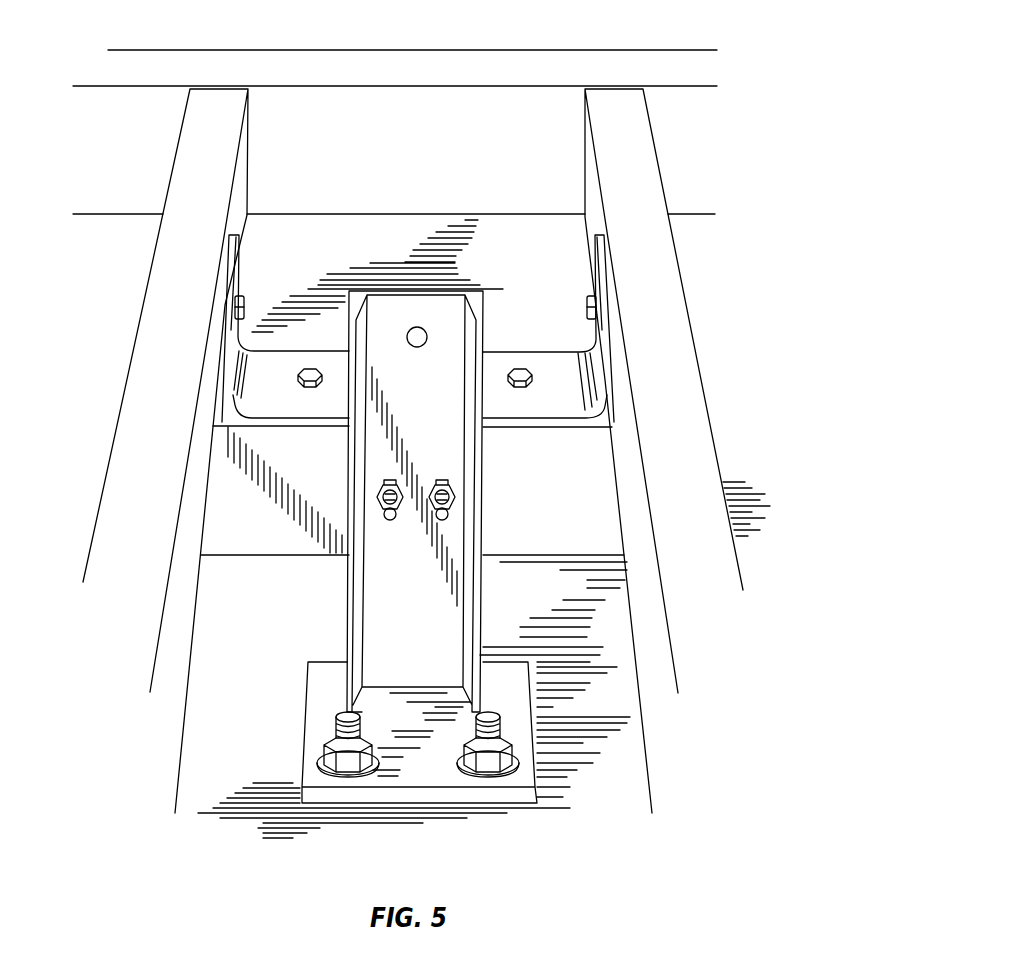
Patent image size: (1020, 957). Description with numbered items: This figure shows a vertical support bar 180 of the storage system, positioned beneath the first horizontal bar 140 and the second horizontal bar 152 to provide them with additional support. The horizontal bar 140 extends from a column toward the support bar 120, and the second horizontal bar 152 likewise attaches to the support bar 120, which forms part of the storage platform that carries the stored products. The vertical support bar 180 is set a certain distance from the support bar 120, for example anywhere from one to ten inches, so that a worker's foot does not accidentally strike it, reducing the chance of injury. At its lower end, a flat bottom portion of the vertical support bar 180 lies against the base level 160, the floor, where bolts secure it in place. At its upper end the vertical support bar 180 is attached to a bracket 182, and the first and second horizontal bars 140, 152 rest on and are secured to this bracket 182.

The support bar 120 is at (428, 128).
The horizontal bar 140 is at (690, 448).
The second horizontal bar 152 is at (153, 367).
The base level 160 is at (576, 863).
The vertical support bar 180 is at (337, 603).
The bracket 182 is at (547, 492).